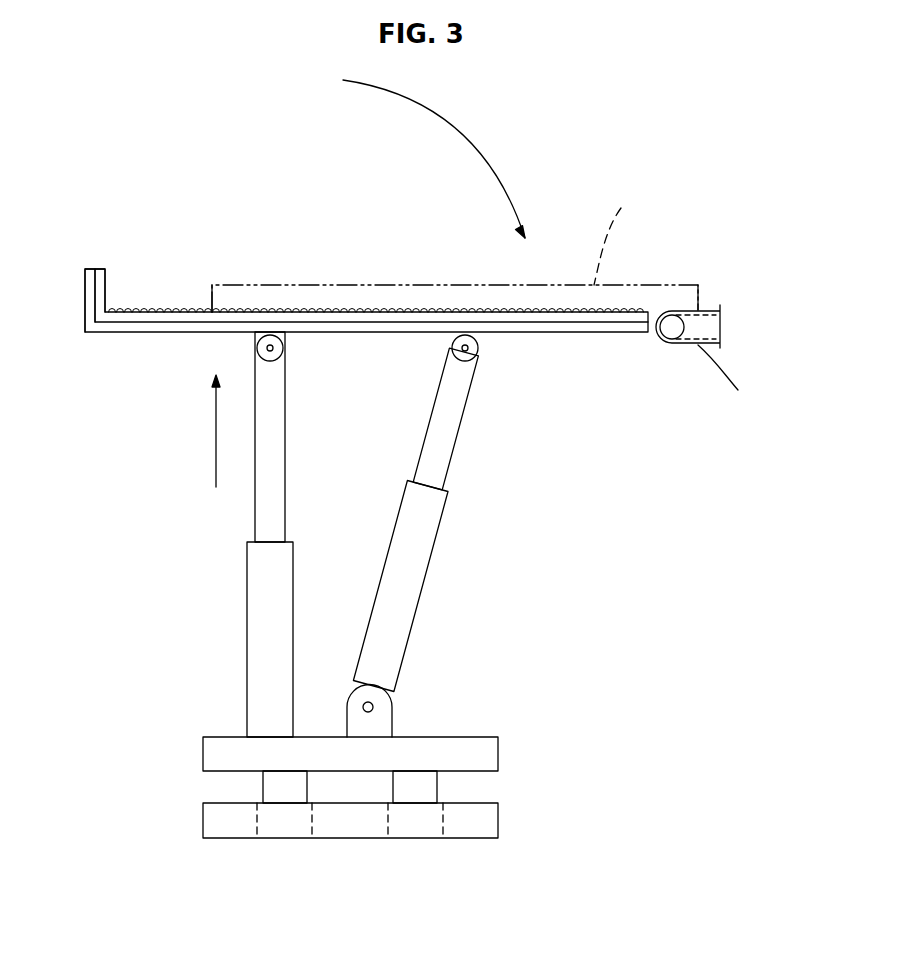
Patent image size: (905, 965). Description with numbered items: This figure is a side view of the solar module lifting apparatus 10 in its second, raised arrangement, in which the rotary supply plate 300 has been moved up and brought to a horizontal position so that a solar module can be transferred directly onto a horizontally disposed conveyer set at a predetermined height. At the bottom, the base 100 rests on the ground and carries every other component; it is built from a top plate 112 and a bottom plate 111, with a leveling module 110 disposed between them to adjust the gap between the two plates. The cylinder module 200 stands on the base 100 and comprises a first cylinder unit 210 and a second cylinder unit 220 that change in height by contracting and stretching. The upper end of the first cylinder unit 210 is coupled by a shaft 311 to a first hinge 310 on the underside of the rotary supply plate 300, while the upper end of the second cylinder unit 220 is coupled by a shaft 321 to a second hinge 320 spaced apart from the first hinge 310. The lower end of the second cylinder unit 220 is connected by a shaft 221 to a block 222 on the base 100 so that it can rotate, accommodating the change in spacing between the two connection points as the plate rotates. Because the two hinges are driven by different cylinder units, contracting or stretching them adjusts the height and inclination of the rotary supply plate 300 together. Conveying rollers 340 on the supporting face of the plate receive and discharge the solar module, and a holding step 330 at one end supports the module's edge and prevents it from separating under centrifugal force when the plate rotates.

The solar module lifting apparatus 10 is at (159, 160).
The base 100 is at (515, 783).
The leveling module 110 is at (305, 782).
The bottom plate 111 is at (227, 827).
The top plate 112 is at (210, 748).
The cylinder module 200 is at (502, 550).
The first cylinder unit 210 is at (255, 590).
The second cylinder unit 220 is at (420, 558).
The shaft 221 is at (377, 706).
The block 222 is at (382, 724).
The rotary supply plate 300 is at (605, 338).
The first hinge 310 is at (282, 351).
The shaft 311 is at (282, 352).
The second hinge 320 is at (477, 353).
The shaft 321 is at (462, 349).
The holding step 330 is at (110, 272).
The conveying rollers 340 is at (173, 312).